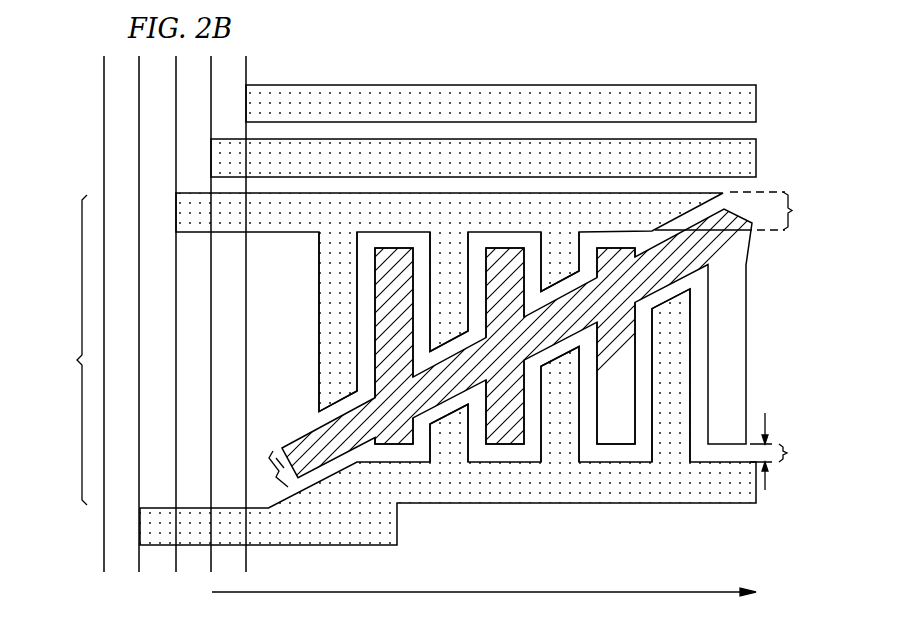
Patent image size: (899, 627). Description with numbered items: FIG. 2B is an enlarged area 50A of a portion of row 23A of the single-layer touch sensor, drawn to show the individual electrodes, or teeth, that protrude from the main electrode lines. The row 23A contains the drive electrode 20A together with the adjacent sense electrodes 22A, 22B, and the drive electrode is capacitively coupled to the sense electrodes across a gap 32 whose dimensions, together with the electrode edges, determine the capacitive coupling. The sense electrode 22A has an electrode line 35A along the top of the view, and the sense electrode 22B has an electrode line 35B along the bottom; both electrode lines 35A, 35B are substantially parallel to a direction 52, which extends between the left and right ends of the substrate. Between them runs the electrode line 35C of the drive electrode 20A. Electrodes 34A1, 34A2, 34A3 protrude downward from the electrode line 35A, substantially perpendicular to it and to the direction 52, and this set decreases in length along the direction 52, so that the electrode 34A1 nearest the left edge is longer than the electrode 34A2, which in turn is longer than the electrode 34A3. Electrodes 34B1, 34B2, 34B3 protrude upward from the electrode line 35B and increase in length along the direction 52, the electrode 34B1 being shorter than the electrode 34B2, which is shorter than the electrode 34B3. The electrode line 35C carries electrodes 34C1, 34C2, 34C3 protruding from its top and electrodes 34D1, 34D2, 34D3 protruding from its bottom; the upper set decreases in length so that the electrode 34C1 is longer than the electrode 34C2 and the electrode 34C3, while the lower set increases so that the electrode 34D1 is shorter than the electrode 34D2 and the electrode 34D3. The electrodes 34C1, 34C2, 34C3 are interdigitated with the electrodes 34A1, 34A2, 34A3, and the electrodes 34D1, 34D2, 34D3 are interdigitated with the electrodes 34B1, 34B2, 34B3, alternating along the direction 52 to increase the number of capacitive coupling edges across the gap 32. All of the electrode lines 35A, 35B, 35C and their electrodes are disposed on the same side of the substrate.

The enlarged area 50A is at (679, 54).
The drive electrode 20A is at (730, 238).
The sense electrode 22A is at (287, 218).
The sense electrode 22B is at (413, 488).
The row 23A is at (60, 350).
The gap 32 is at (766, 418).
The electrode 34A1 is at (337, 297).
The electrode 34A2 is at (452, 238).
The electrode 34A3 is at (567, 238).
The electrode 34B1 is at (450, 452).
The electrode 34B2 is at (562, 452).
The electrode 34B3 is at (673, 368).
The electrode 34C1 is at (392, 339).
The electrode 34C2 is at (508, 238).
The electrode 34C3 is at (622, 238).
The electrode 34D1 is at (389, 445).
The electrode 34D2 is at (503, 440).
The electrode 34D3 is at (618, 432).
The electrode line 35A is at (745, 211).
The electrode line 35B is at (804, 454).
The electrode line 35C is at (275, 470).
The direction 52 is at (700, 590).